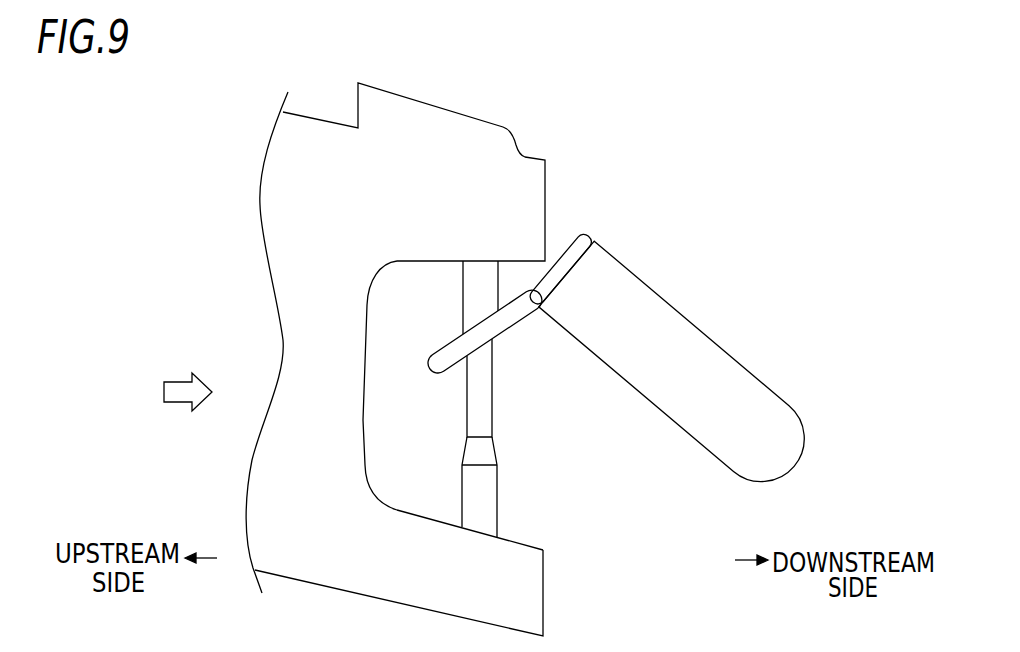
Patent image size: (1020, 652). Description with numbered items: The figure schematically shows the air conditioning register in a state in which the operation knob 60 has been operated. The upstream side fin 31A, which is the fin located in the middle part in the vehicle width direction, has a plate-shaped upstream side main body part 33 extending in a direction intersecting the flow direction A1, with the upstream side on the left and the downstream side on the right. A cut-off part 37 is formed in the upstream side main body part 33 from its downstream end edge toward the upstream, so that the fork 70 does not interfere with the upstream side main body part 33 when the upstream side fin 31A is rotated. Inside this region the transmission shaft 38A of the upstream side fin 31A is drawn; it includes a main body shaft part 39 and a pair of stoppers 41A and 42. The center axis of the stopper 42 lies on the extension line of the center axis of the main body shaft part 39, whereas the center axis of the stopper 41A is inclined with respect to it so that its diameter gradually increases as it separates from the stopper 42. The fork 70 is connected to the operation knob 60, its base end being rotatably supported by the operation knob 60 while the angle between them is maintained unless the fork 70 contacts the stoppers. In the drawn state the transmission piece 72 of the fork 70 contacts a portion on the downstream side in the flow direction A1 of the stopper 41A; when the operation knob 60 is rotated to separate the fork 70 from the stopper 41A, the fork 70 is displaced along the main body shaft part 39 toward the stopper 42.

The upstream side fin 31A is at (258, 127).
The upstream side main body part 33 is at (272, 226).
The cut-off part 37 is at (364, 427).
The transmission shaft 38A is at (457, 482).
The main body shaft part 39 is at (467, 394).
The stopper 41A is at (492, 343).
The stopper 42 is at (475, 453).
The operation knob 60 is at (653, 310).
The fork 70 is at (525, 319).
The transmission piece 72 is at (437, 345).
The flow direction A1 is at (182, 404).